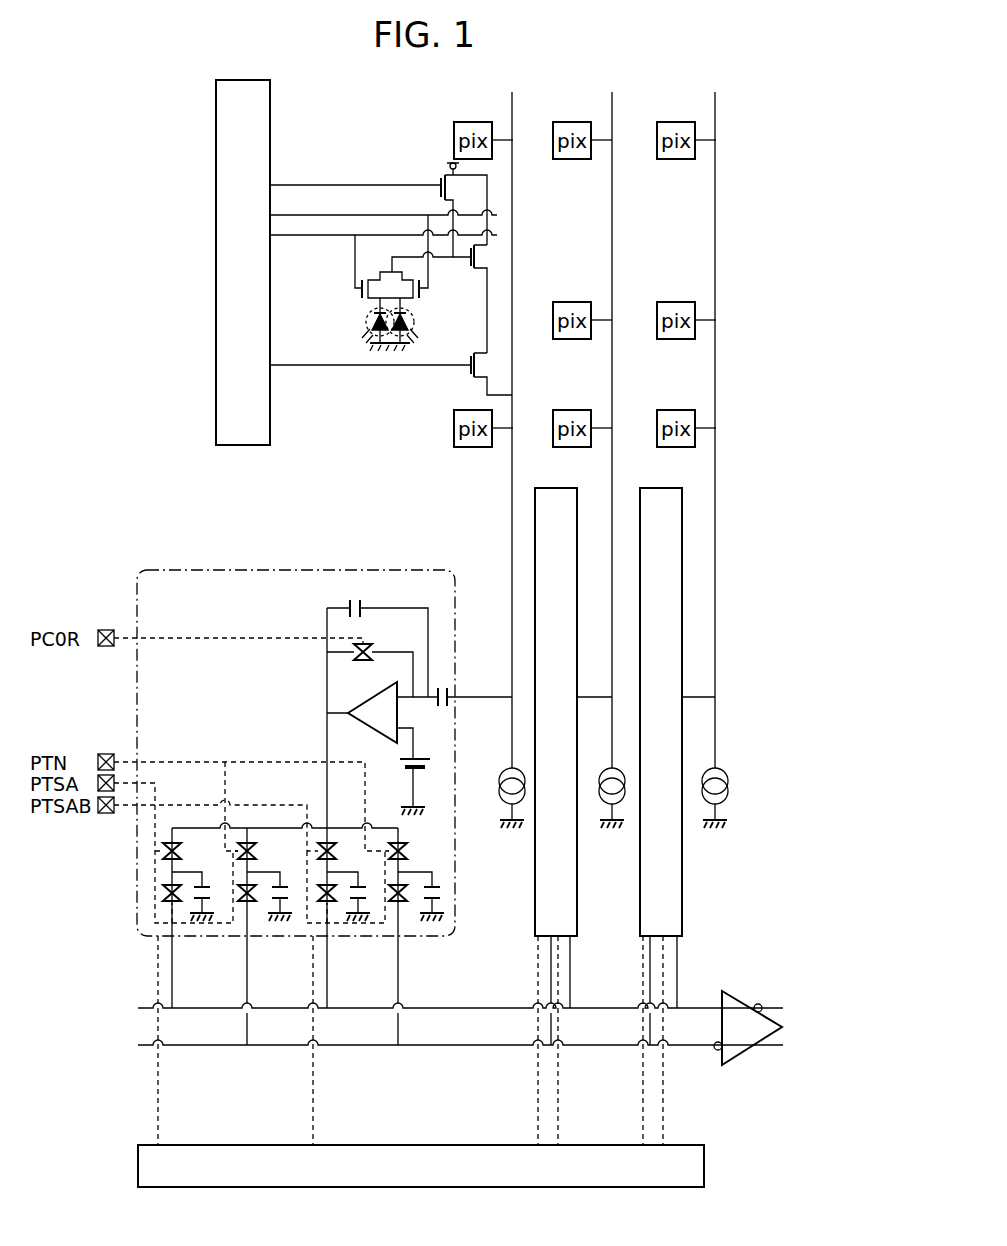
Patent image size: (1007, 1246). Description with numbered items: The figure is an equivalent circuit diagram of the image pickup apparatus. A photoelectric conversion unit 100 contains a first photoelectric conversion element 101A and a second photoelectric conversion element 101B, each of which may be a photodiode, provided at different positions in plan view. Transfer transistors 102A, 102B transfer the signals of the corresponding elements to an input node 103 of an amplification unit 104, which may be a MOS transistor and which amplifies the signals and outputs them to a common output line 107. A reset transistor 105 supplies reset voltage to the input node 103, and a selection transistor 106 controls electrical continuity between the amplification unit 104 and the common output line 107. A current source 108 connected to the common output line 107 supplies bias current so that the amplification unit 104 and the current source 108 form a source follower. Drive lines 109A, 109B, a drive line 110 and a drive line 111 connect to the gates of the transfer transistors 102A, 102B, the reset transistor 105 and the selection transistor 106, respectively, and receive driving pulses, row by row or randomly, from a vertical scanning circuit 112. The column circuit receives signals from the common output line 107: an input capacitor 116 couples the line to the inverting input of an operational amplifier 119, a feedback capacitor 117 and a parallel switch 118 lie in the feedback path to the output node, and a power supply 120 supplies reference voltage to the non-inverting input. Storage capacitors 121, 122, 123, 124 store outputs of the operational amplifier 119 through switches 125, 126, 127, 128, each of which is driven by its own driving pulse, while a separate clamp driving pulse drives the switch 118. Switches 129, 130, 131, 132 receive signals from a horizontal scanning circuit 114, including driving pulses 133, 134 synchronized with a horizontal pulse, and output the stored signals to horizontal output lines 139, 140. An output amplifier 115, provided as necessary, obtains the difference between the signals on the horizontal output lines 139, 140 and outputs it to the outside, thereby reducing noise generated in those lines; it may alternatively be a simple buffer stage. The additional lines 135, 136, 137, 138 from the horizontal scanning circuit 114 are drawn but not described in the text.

The photoelectric conversion unit 100 is at (390, 355).
The first photoelectric conversion element 101A is at (375, 340).
The second photoelectric conversion element 101B is at (403, 340).
The transfer transistor 102A is at (362, 290).
The transfer transistor 102B is at (415, 297).
The input node 103 is at (412, 257).
The amplification unit 104 is at (478, 256).
The reset transistor 105 is at (456, 183).
The selection transistor 106 is at (478, 365).
The common output line 107 is at (512, 482).
The current source 108 is at (500, 785).
The drive line 109A is at (363, 234).
The drive line 109B is at (415, 214).
The drive line 110 is at (338, 186).
The drive line 111 is at (295, 367).
The vertical scanning circuit 112 is at (216, 225).
The horizontal scanning circuit 114 is at (704, 1165).
The output amplifier 115 is at (741, 991).
The input capacitor 116 is at (440, 680).
The feedback capacitor 117 is at (348, 603).
The switch 118 is at (383, 634).
The operational amplifier 119 is at (357, 707).
The power supply 120 is at (422, 752).
The storage capacitor 121 is at (205, 880).
The storage capacitor 122 is at (280, 880).
The storage capacitor 123 is at (365, 875).
The storage capacitor 124 is at (433, 877).
The switch 125 is at (160, 855).
The switch 126 is at (252, 840).
The switch 127 is at (333, 840).
The switch 128 is at (408, 845).
The switch 129 is at (176, 903).
The switch 130 is at (251, 903).
The switch 131 is at (331, 903).
The switch 132 is at (402, 903).
The driving pulse 133 is at (158, 1072).
The driving pulse 134 is at (313, 1100).
The horizontal scanning signal line 135 is at (538, 1090).
The horizontal scanning signal line 136 is at (558, 1110).
The horizontal scanning signal line 137 is at (643, 1090).
The horizontal scanning signal line 138 is at (663, 1090).
The horizontal output line 139 is at (138, 1008).
The horizontal output line 140 is at (138, 1045).